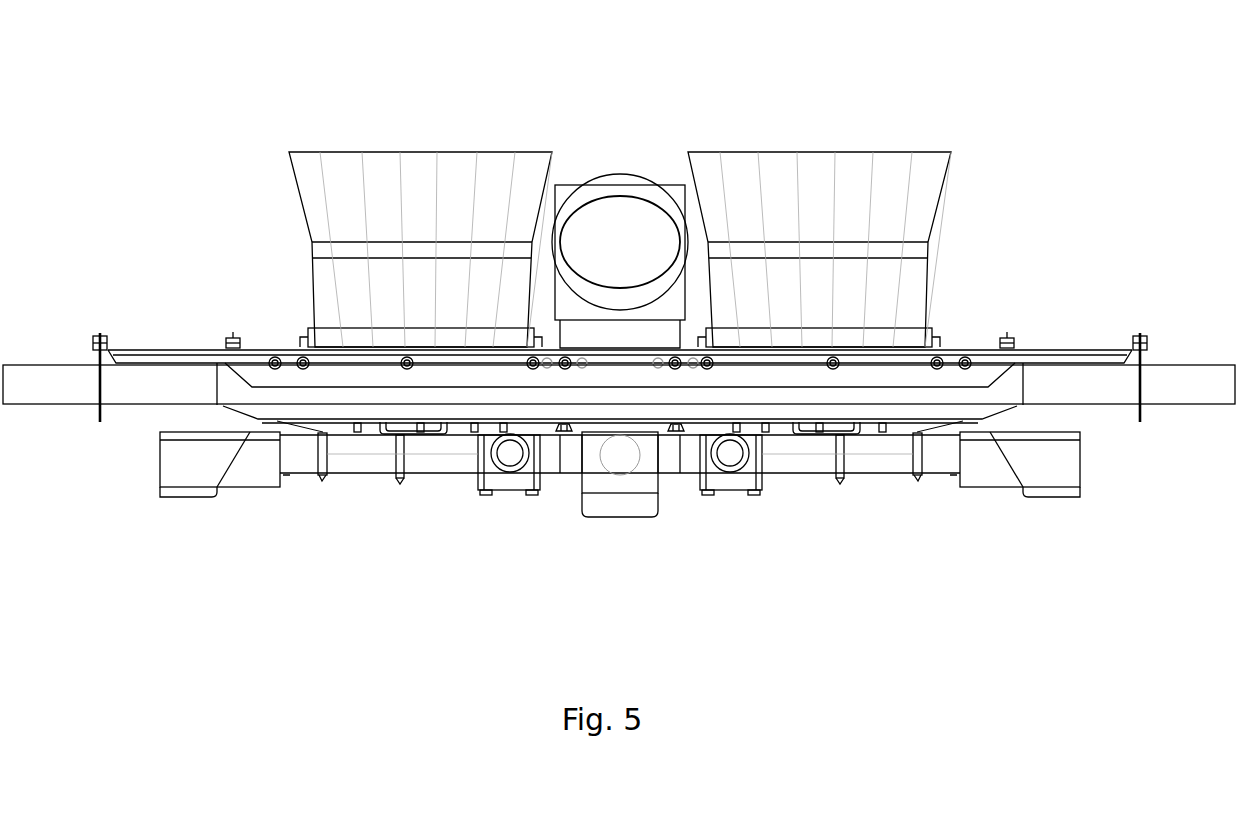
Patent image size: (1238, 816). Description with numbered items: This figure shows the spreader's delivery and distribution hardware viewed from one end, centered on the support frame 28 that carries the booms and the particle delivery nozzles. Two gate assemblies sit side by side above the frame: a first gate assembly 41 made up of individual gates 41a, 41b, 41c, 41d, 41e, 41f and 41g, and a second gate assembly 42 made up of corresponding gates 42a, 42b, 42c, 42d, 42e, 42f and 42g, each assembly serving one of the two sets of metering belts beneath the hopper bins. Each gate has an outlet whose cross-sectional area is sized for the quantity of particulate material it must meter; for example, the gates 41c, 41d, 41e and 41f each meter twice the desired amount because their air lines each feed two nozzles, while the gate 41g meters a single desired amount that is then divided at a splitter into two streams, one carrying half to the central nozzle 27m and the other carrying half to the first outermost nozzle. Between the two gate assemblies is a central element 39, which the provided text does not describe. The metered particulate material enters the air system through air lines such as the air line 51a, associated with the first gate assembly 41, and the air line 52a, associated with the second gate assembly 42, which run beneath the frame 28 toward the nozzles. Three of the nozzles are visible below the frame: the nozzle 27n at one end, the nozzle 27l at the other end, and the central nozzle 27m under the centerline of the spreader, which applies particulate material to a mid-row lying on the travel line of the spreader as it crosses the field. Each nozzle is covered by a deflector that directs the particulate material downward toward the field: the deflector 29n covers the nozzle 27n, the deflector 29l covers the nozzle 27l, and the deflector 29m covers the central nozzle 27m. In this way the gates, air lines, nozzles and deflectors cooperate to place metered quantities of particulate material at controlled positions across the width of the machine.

The support frame 28 is at (1178, 397).
The central discharge chute 39 is at (624, 217).
The gates 41 is at (934, 225).
The gate 41a is at (704, 160).
The gate 41b is at (744, 162).
The gate 41c is at (780, 160).
The gate 41d is at (820, 162).
The gate 41e is at (857, 160).
The gate 41f is at (897, 162).
The gate 41g is at (932, 160).
The gates 42 is at (301, 200).
The gate 42a is at (535, 160).
The gate 42b is at (500, 162).
The gate 42c is at (458, 160).
The gate 42d is at (420, 162).
The gate 42e is at (380, 160).
The gate 42f is at (343, 162).
The gate 42g is at (306, 160).
The particle delivery nozzle 27n is at (228, 470).
The deflector 29n is at (172, 478).
The particle delivery nozzle 27l is at (1003, 472).
The deflector 29l is at (1068, 474).
The central nozzle 27m is at (660, 489).
The deflector 29m is at (594, 484).
The air line 52a is at (447, 466).
The air line 51a is at (787, 466).